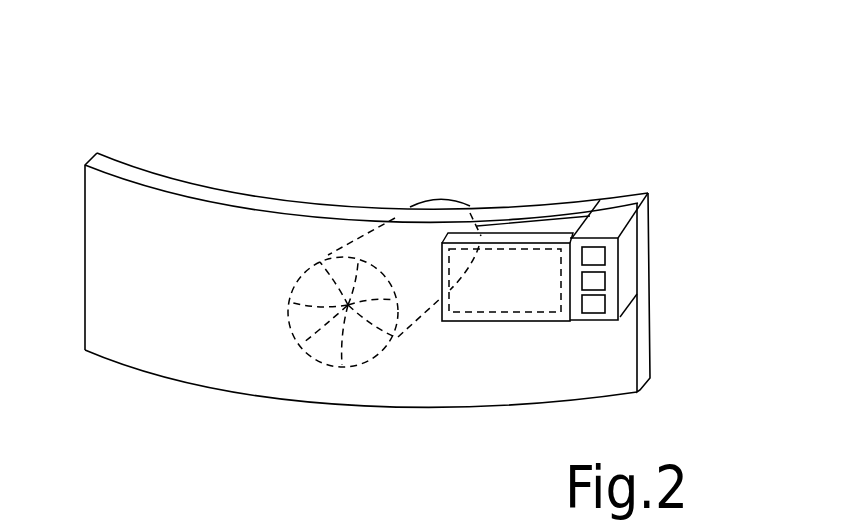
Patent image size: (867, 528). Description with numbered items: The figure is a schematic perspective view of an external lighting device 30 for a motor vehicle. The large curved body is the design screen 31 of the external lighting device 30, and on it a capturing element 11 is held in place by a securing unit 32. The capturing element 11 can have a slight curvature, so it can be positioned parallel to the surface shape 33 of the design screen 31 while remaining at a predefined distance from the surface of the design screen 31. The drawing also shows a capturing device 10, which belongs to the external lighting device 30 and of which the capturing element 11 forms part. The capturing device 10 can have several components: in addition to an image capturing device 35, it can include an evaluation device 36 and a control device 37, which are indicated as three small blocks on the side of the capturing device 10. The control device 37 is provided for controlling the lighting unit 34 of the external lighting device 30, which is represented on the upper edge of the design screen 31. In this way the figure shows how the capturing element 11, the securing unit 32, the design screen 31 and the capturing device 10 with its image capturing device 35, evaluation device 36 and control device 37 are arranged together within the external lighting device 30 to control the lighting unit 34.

The external lighting device 30 is at (262, 176).
The design screen 31 is at (187, 192).
The securing unit 32 is at (640, 218).
The surface shape 33 is at (233, 362).
The lighting unit 34 is at (435, 200).
The capturing device 10 is at (518, 223).
The capturing element 11 is at (517, 297).
The image capturing device 35 is at (597, 257).
The evaluation device 36 is at (598, 282).
The control device 37 is at (595, 305).